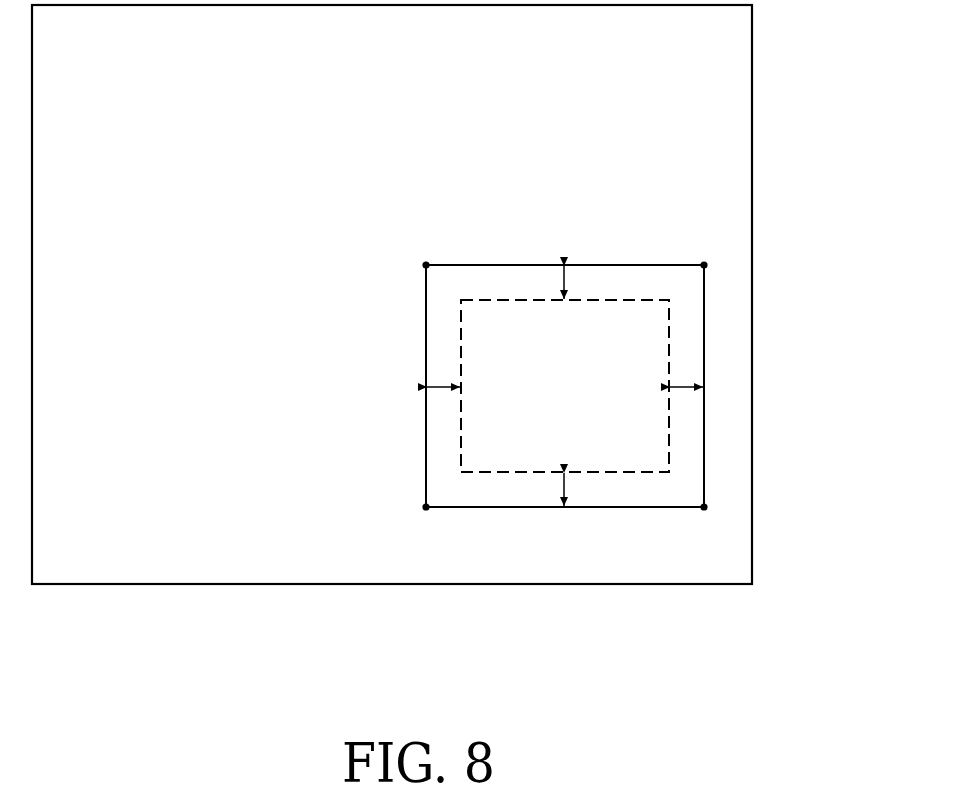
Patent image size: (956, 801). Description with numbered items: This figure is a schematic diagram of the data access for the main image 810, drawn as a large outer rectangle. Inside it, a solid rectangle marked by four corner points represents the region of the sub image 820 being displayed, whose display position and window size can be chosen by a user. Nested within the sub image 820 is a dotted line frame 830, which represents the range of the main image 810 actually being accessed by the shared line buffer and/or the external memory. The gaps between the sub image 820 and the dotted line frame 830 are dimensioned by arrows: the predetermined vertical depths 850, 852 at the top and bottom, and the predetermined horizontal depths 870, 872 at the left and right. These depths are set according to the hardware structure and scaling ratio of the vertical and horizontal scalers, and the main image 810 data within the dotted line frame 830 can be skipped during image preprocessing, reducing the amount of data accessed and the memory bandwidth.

The main image 810 is at (735, 117).
The sub image 820 is at (426, 306).
The dotted line frame 830 is at (670, 345).
The predetermined vertical depth 850 is at (567, 286).
The predetermined vertical depth 852 is at (565, 492).
The predetermined horizontal depth 870 is at (427, 408).
The predetermined horizontal depth 872 is at (685, 390).